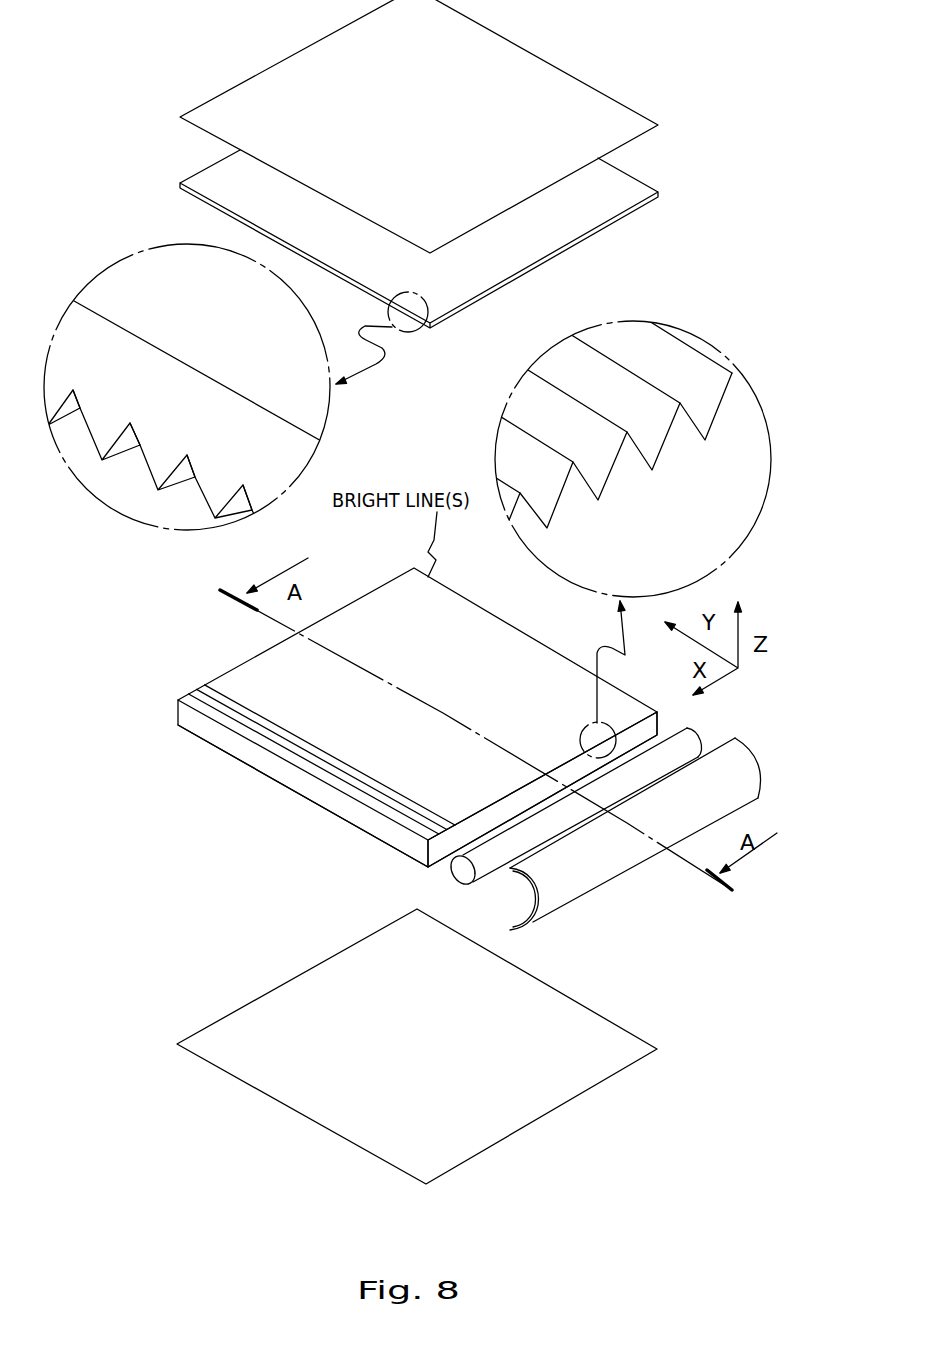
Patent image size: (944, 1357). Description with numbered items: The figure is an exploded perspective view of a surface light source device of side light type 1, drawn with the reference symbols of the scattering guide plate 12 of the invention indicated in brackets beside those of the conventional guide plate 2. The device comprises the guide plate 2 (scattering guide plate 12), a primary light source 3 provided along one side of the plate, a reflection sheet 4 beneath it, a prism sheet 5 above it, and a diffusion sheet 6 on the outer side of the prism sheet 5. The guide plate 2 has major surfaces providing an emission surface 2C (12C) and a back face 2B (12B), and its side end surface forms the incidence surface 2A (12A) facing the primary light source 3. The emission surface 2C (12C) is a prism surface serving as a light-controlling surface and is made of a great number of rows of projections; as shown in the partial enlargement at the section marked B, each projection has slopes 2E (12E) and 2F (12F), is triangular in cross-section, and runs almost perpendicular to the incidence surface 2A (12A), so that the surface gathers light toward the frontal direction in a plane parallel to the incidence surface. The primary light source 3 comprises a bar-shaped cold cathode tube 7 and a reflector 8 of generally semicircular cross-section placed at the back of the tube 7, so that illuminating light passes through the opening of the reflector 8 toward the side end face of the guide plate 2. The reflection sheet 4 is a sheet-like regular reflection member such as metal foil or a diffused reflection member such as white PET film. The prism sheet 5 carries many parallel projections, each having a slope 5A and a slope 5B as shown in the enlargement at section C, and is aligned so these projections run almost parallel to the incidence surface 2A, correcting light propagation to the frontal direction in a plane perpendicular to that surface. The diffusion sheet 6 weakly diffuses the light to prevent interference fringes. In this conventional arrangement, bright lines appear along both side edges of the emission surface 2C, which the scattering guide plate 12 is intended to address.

The surface light source device of side light type 1 is at (214, 1167).
The guide plate 2 is at (470, 533).
The incidence surface 2A is at (532, 526).
The back face 2B is at (303, 803).
The emission surface 2C is at (275, 736).
The slope 2E is at (476, 339).
The slope 2F is at (637, 406).
The primary light source 3 is at (547, 794).
The reflection sheet 4 is at (469, 1154).
The prism sheet 5 is at (628, 185).
The slope 5A is at (190, 470).
The slope 5B is at (142, 445).
The diffusion sheet 6 is at (612, 113).
The cold cathode tube 7 is at (450, 866).
The reflector 8 is at (635, 852).
The scattering guide plate 12 is at (470, 533).
The incidence surface 12A is at (562, 778).
The back face 12B is at (262, 783).
The emission surface 12C is at (257, 682).
The slope 12E is at (592, 378).
The slope 12F is at (672, 385).